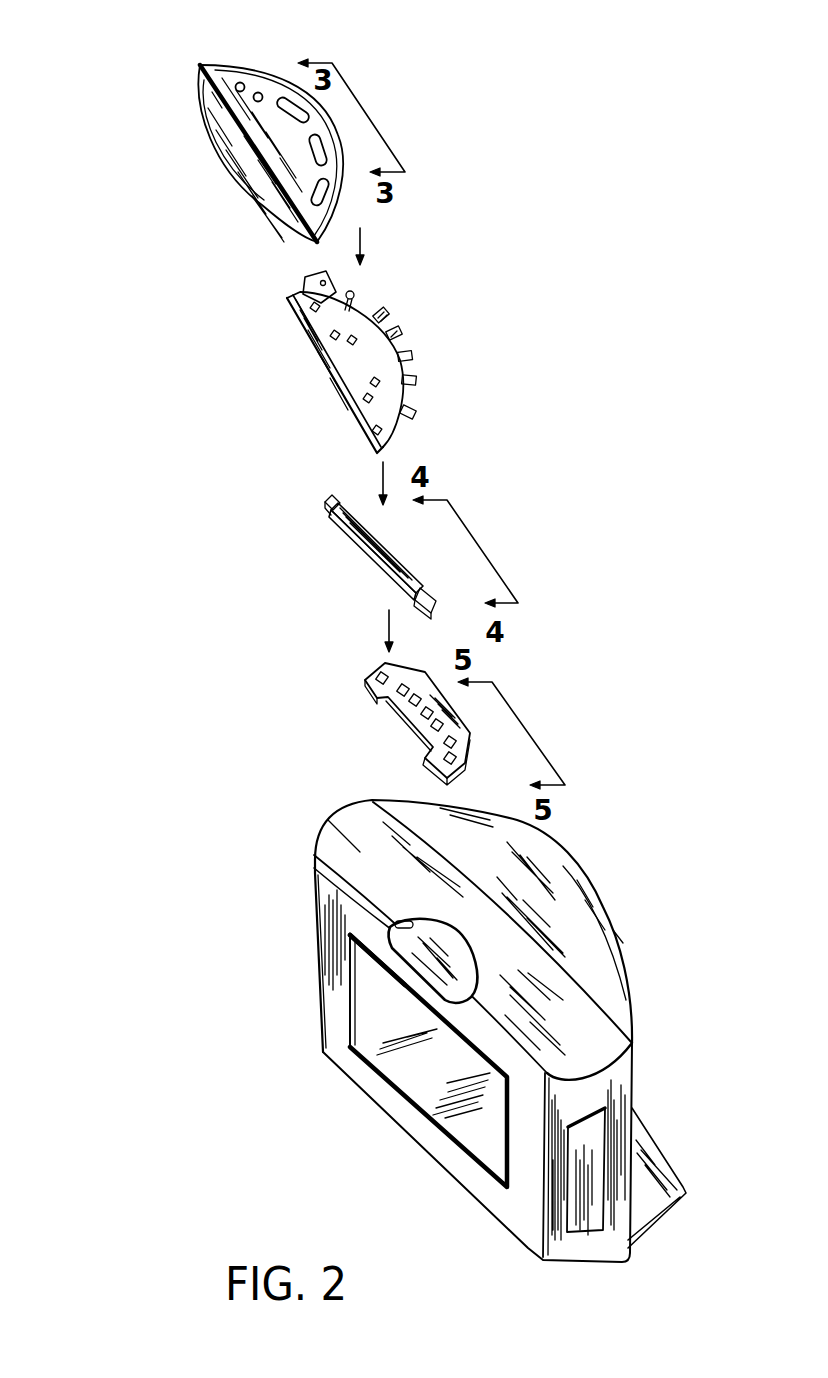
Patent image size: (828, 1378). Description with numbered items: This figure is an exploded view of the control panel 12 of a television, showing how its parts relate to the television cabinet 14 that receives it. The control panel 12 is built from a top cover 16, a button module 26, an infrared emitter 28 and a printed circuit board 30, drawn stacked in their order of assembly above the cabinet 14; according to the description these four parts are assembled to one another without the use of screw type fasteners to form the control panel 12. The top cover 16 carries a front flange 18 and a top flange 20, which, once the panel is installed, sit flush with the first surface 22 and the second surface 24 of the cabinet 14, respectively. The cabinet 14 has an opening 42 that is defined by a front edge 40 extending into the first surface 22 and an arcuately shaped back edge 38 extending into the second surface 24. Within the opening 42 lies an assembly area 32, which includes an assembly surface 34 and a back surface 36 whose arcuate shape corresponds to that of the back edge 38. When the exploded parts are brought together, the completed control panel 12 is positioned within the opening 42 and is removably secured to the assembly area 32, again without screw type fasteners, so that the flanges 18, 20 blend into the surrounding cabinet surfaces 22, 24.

The control panel 12 is at (145, 402).
The television cabinet 14 is at (466, 1031).
The top cover 16 is at (212, 136).
The front flange 18 is at (275, 208).
The top flange 20 is at (272, 87).
The first surface 22 is at (530, 1100).
The second surface 24 is at (607, 1047).
The button module 26 is at (450, 364).
The infrared emitter 28 is at (324, 555).
The printed circuit board 30 is at (335, 658).
The assembly area 32 is at (357, 933).
The assembly surface 34 is at (403, 943).
The back surface 36 is at (315, 872).
The back edge 38 is at (443, 920).
The front edge 40 is at (395, 1030).
The opening 42 is at (400, 980).